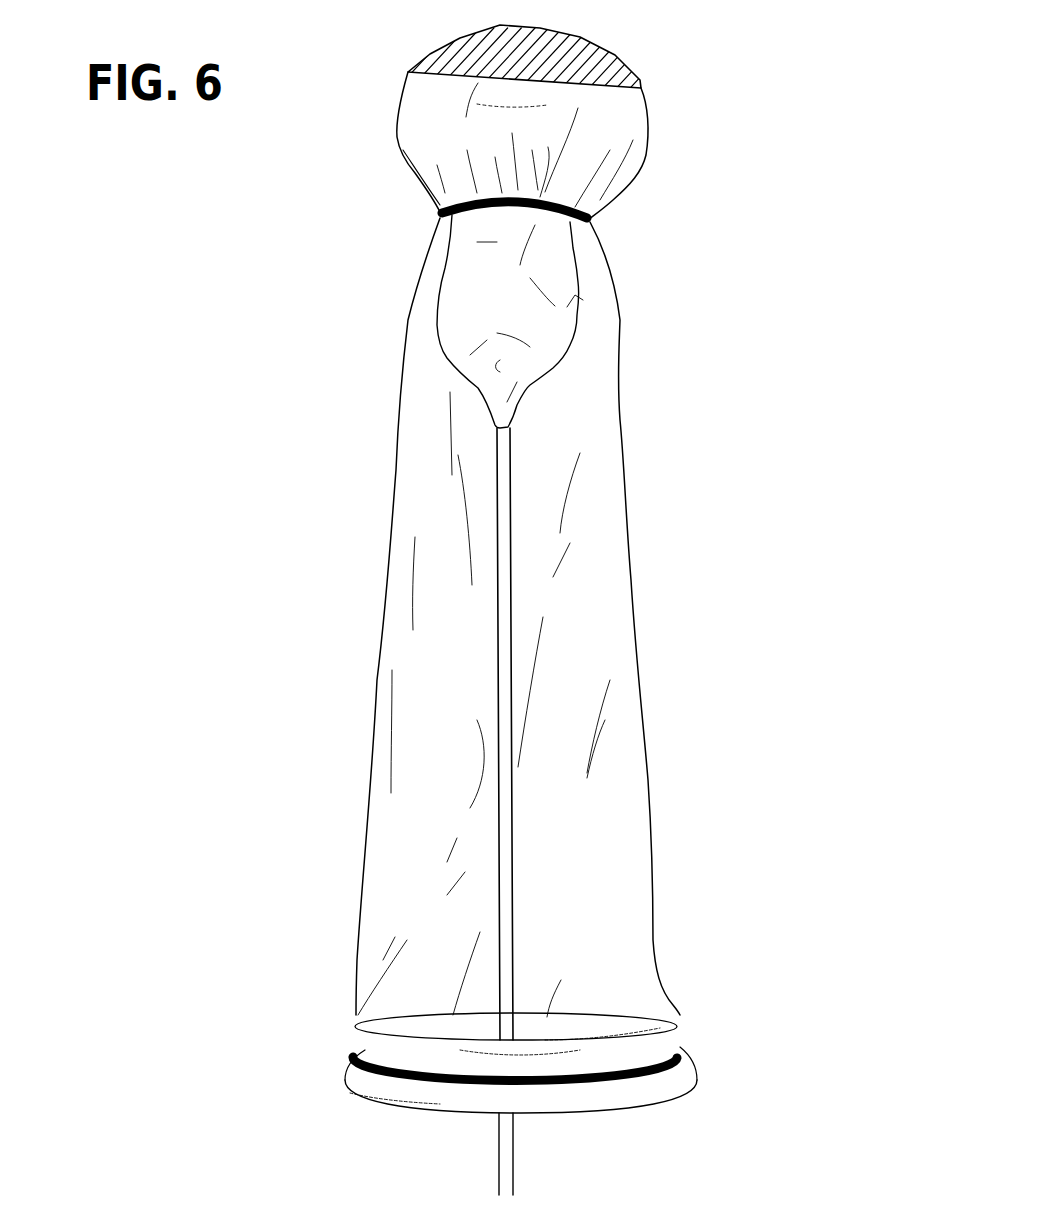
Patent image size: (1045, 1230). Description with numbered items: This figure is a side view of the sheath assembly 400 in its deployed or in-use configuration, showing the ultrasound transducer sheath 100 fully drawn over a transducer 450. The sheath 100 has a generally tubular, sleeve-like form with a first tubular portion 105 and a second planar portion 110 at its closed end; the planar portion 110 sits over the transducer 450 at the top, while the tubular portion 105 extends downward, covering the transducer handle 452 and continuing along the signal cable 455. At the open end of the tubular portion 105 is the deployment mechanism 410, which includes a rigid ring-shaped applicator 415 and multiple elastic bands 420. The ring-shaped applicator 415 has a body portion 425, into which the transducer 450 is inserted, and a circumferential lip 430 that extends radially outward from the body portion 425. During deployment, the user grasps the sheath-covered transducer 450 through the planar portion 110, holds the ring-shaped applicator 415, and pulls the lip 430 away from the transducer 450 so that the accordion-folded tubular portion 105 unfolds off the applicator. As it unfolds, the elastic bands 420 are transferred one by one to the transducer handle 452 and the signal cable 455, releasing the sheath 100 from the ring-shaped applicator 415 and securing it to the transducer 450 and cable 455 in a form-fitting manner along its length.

The ultrasound transducer sheath 100 is at (635, 412).
The tubular portion 105 is at (608, 560).
The planar portion 110 is at (560, 52).
The sheath assembly 400 is at (313, 308).
The deployment mechanism 410 is at (486, 1098).
The ring-shaped applicator 415 is at (486, 1098).
The elastic bands 420 is at (442, 217).
The body portion 425 is at (390, 1043).
The circumferential lip 430 is at (648, 1100).
The transducer 450 is at (560, 142).
The transducer handle 452 is at (487, 257).
The signal cable 455 is at (503, 640).